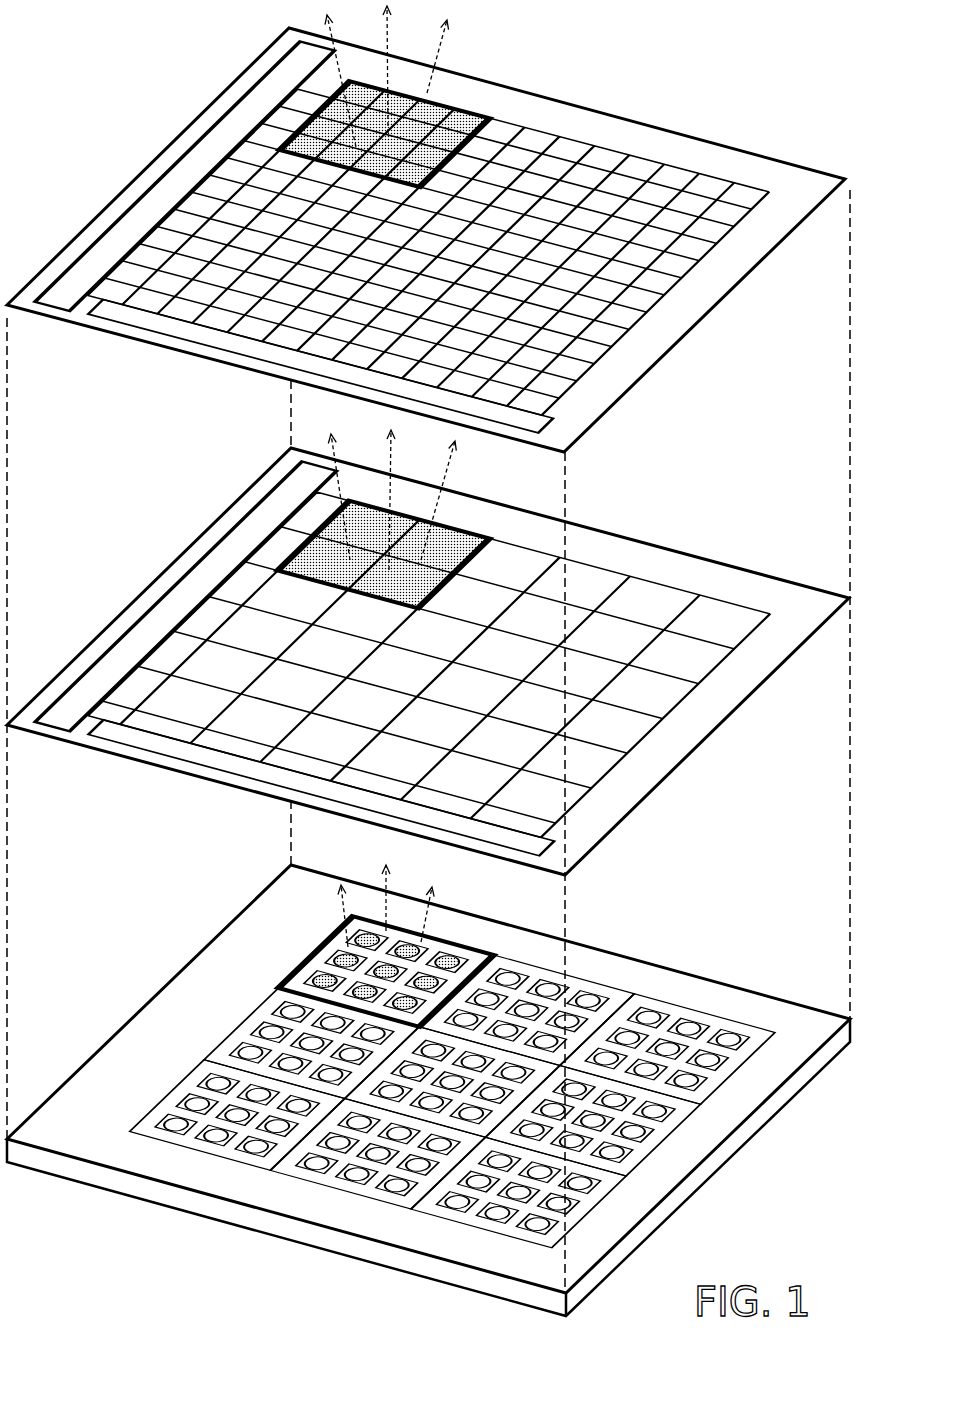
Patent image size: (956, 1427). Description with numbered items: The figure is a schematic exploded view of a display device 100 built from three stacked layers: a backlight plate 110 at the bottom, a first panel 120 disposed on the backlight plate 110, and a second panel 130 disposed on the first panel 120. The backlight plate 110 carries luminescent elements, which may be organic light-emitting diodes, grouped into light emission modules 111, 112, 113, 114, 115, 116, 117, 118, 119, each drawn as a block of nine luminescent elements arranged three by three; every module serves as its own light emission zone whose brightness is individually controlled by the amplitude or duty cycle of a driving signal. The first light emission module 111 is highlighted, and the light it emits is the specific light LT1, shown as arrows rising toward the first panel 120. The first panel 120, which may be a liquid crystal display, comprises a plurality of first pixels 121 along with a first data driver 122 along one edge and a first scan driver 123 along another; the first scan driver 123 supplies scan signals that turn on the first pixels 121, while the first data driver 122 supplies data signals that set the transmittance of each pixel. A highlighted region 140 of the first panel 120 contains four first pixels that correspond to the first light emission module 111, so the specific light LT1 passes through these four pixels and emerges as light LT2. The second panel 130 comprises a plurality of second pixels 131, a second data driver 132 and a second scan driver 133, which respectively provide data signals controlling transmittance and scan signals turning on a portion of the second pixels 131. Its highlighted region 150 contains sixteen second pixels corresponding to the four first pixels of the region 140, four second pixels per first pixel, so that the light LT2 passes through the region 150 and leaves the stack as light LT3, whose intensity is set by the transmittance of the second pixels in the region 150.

The display device 100 is at (811, 52).
The backlight plate 110 is at (762, 1011).
The first light emission module 111 is at (282, 978).
The light emission module 112 is at (594, 984).
The light emission module 113 is at (674, 1002).
The light emission module 114 is at (246, 1017).
The light emission module 115 is at (361, 1103).
The light emission module 116 is at (651, 1148).
The light emission module 117 is at (182, 1078).
The light emission module 118 is at (361, 1183).
The light emission module 119 is at (443, 1210).
The first panel 120 is at (642, 559).
The first pixels 121 is at (258, 725).
The first data driver 122 is at (174, 608).
The first scan driver 123 is at (171, 752).
The second panel 130 is at (643, 139).
The second pixels 131 is at (263, 319).
The second data driver 132 is at (171, 186).
The second scan driver 133 is at (168, 328).
The region of the first panel 140 is at (283, 558).
The region of the second panel 150 is at (278, 140).
The specific light LT1 is at (334, 928).
The light passing through the first pixels of the region LT2 is at (341, 503).
The light passing through the second pixels of the region LT3 is at (348, 80).